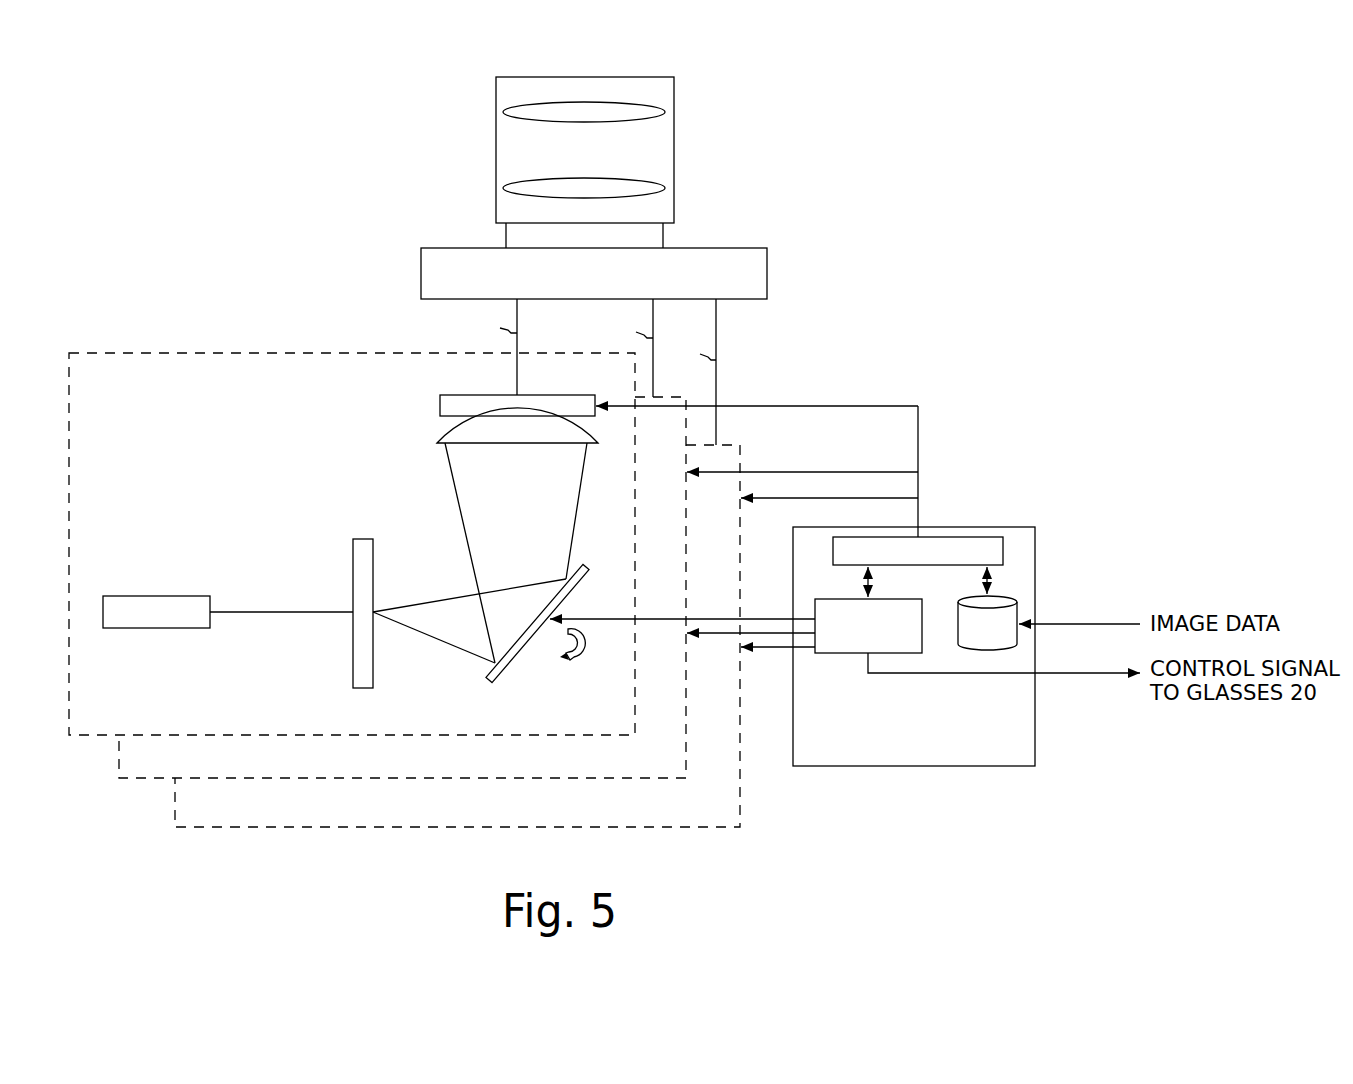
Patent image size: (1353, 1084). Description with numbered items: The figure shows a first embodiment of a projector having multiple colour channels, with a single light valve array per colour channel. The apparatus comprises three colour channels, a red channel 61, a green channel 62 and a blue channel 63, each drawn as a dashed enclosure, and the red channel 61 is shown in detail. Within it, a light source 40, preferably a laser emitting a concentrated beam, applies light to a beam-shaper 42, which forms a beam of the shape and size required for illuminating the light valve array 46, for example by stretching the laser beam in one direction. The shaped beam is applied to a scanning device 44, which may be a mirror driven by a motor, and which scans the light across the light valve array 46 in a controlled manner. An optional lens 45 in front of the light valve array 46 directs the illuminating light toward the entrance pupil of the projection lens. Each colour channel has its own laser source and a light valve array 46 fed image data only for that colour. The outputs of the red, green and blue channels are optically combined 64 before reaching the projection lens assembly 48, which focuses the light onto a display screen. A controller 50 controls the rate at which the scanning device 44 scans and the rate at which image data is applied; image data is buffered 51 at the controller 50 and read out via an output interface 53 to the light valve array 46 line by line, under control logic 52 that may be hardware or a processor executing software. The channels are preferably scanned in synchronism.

The light source 40 is at (162, 596).
The beam-shaper 42 is at (353, 549).
The scanning device 44 is at (512, 667).
The lens 45 is at (437, 440).
The light valve array 46 is at (440, 404).
The projection lens assembly 48 is at (496, 164).
The controller 50 is at (922, 760).
The buffer 51 is at (998, 637).
The control logic 52 is at (850, 654).
The output interface 53 is at (848, 566).
The red channel 61 is at (292, 721).
The green channel 62 is at (377, 769).
The blue channel 63 is at (417, 814).
The optical combiner 64 is at (421, 272).